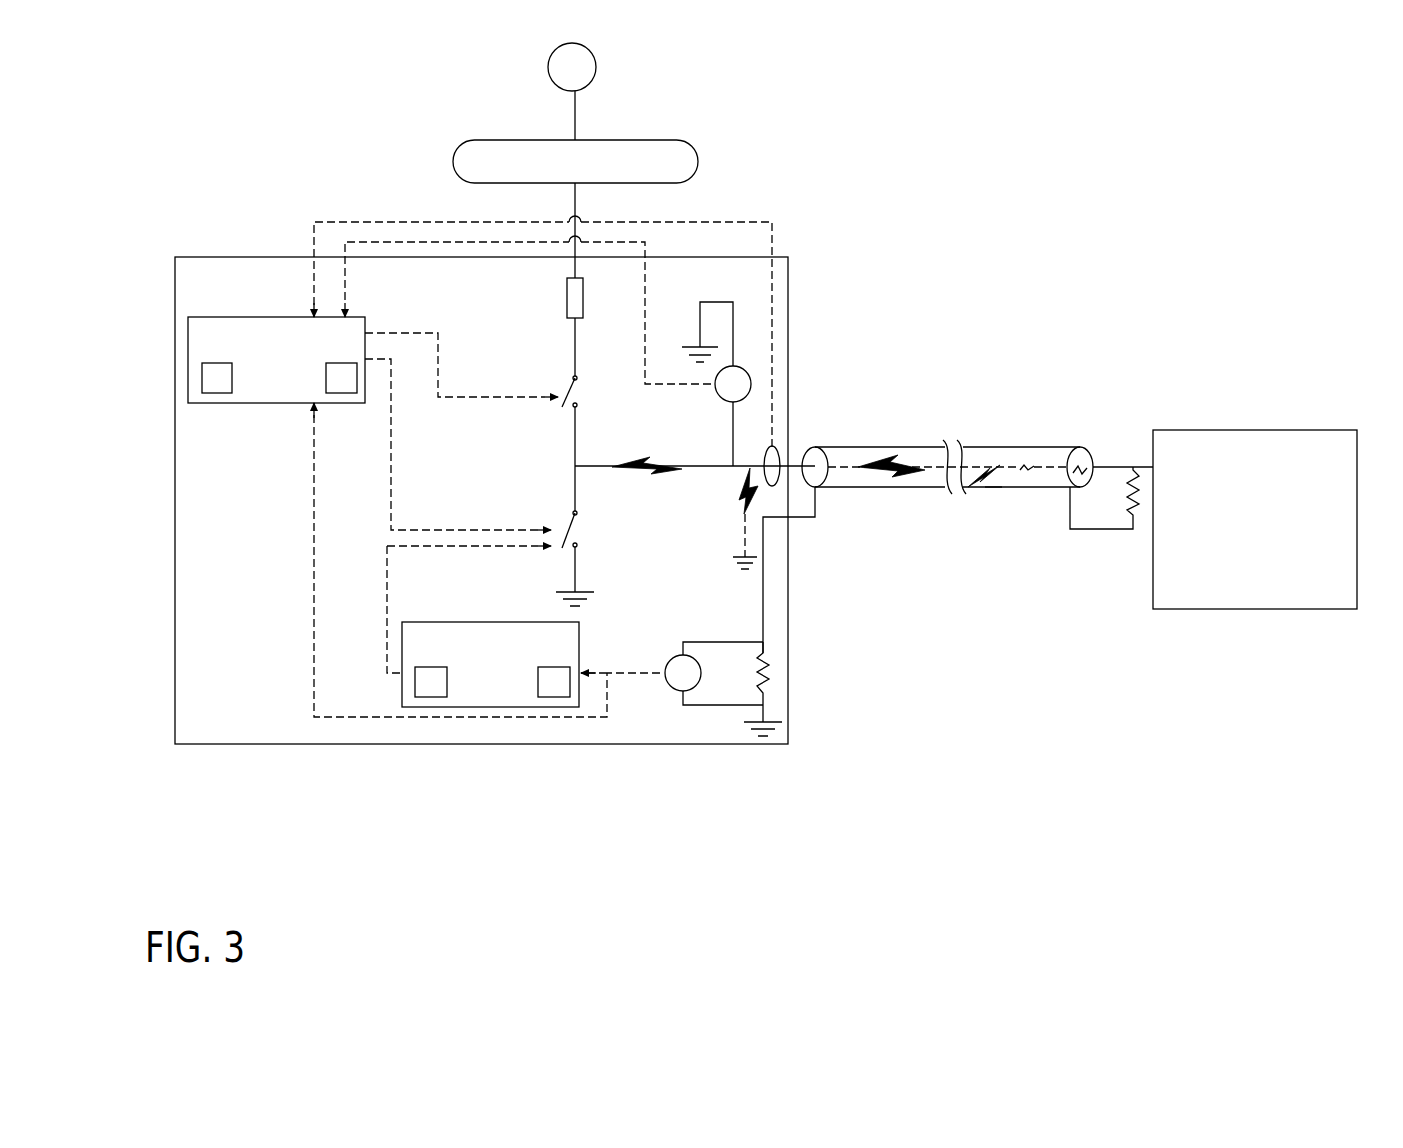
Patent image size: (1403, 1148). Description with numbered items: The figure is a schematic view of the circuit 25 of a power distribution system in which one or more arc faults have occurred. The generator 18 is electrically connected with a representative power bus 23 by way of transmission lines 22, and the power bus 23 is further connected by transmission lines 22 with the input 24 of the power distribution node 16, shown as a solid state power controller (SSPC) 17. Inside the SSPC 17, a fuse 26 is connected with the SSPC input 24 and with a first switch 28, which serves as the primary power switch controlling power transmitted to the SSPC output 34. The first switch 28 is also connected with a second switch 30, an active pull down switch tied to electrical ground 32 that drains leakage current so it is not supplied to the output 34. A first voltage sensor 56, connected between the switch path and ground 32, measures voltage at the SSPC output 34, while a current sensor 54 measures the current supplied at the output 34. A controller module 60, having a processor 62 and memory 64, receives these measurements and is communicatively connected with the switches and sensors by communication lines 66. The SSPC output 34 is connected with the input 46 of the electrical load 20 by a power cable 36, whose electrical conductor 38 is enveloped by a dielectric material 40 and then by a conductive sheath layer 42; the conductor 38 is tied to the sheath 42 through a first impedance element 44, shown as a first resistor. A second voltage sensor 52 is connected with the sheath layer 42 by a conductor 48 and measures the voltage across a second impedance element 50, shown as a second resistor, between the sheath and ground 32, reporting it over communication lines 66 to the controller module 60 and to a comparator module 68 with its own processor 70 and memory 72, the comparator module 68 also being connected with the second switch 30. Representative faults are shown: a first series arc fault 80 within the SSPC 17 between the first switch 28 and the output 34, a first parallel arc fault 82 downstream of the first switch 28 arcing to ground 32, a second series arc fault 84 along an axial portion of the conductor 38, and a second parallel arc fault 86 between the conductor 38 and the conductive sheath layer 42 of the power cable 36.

The power distribution node 16 is at (280, 245).
The solid state power controller 17 is at (228, 256).
The generator 18 is at (572, 67).
The electrical load 20 is at (1250, 525).
The transmission lines 22 is at (577, 118).
The power bus 23 is at (700, 161).
The SSPC input 24 is at (590, 251).
The circuit 25 is at (1062, 170).
The fuse 26 is at (566, 296).
The first switch 28 is at (561, 418).
The second switch 30 is at (560, 552).
The electrical ground 32 is at (698, 336).
The SSPC output 34 is at (797, 453).
The power cable 36 is at (993, 490).
The electrical conductor 38 is at (1080, 452).
The dielectric material 40 is at (1083, 472).
The conductive sheath layer 42 is at (1027, 474).
The first impedance element 44 is at (1130, 512).
The electrical load input 46 is at (1146, 474).
The conductor 48 is at (822, 507).
The second impedance element 50 is at (770, 668).
The second voltage sensor 52 is at (668, 650).
The current sensor 54 is at (777, 444).
The first voltage sensor 56 is at (745, 362).
The controller module 60 is at (268, 390).
The processor 62 is at (207, 390).
The memory 64 is at (331, 390).
The communication lines 66 is at (390, 330).
The comparator module 68 is at (483, 700).
The processor 70 is at (421, 694).
The memory 72 is at (544, 694).
The first series arc fault 80 is at (650, 453).
The first parallel arc fault 82 is at (740, 492).
The second series arc fault 84 is at (884, 452).
The second parallel arc fault 86 is at (975, 489).